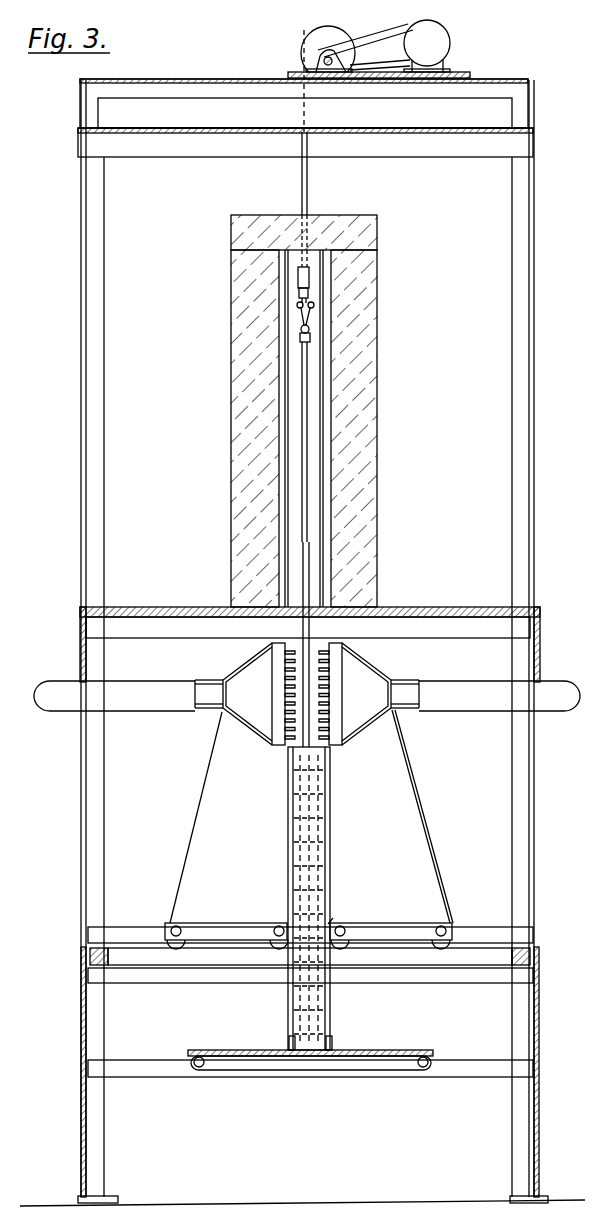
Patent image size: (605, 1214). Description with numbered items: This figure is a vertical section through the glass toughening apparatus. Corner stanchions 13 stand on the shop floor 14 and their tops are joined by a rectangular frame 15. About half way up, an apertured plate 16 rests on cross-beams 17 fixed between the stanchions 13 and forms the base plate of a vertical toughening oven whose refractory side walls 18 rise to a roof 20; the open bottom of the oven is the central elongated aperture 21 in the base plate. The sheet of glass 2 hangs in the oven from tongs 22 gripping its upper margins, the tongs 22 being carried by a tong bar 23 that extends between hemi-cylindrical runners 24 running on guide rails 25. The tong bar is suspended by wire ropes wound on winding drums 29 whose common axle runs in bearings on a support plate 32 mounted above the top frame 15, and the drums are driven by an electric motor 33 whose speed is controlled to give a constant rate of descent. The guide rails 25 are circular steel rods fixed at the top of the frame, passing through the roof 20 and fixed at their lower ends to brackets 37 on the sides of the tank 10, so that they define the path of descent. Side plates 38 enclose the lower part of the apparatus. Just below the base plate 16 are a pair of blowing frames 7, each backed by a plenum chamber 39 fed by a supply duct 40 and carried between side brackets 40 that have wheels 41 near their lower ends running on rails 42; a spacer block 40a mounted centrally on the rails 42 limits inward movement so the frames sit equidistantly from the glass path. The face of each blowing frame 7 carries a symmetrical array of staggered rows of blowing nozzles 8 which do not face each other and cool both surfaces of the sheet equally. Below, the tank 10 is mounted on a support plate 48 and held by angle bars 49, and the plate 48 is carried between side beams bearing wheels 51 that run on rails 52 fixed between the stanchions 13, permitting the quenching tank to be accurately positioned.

The sheet of glass 2 is at (312, 443).
The blowing frame 7 is at (283, 675).
The blowing nozzle 8 is at (287, 747).
The tank 10 is at (330, 1002).
The corner stanchion 13 is at (98, 807).
The shop floor 14 is at (265, 1203).
The rectangular frame 15 is at (533, 140).
The apertured plate 16 is at (447, 605).
The cross-beam 17 is at (82, 627).
The side wall 18 is at (365, 385).
The roof 20 is at (358, 222).
The central elongated aperture 21 is at (320, 598).
The tongs 22 is at (313, 318).
The tong bar 23 is at (308, 292).
The hemi-cylindrical runner 24 is at (312, 278).
The guide rail 25 is at (312, 190).
The winding drum 29 is at (312, 46).
The support plate 32 is at (298, 74).
The electric motor 33 is at (442, 43).
The bracket 37 is at (168, 975).
The side plate 38 is at (542, 867).
The plenum chamber 39 is at (255, 707).
The supply duct 40 is at (78, 690).
The spacer block 40a is at (333, 918).
The wheel 41 is at (168, 923).
The rail 42 is at (137, 935).
The support plate 48 is at (387, 1048).
The angle bar 49 is at (290, 1042).
The wheel 51 is at (200, 1070).
The rail 52 is at (147, 1082).